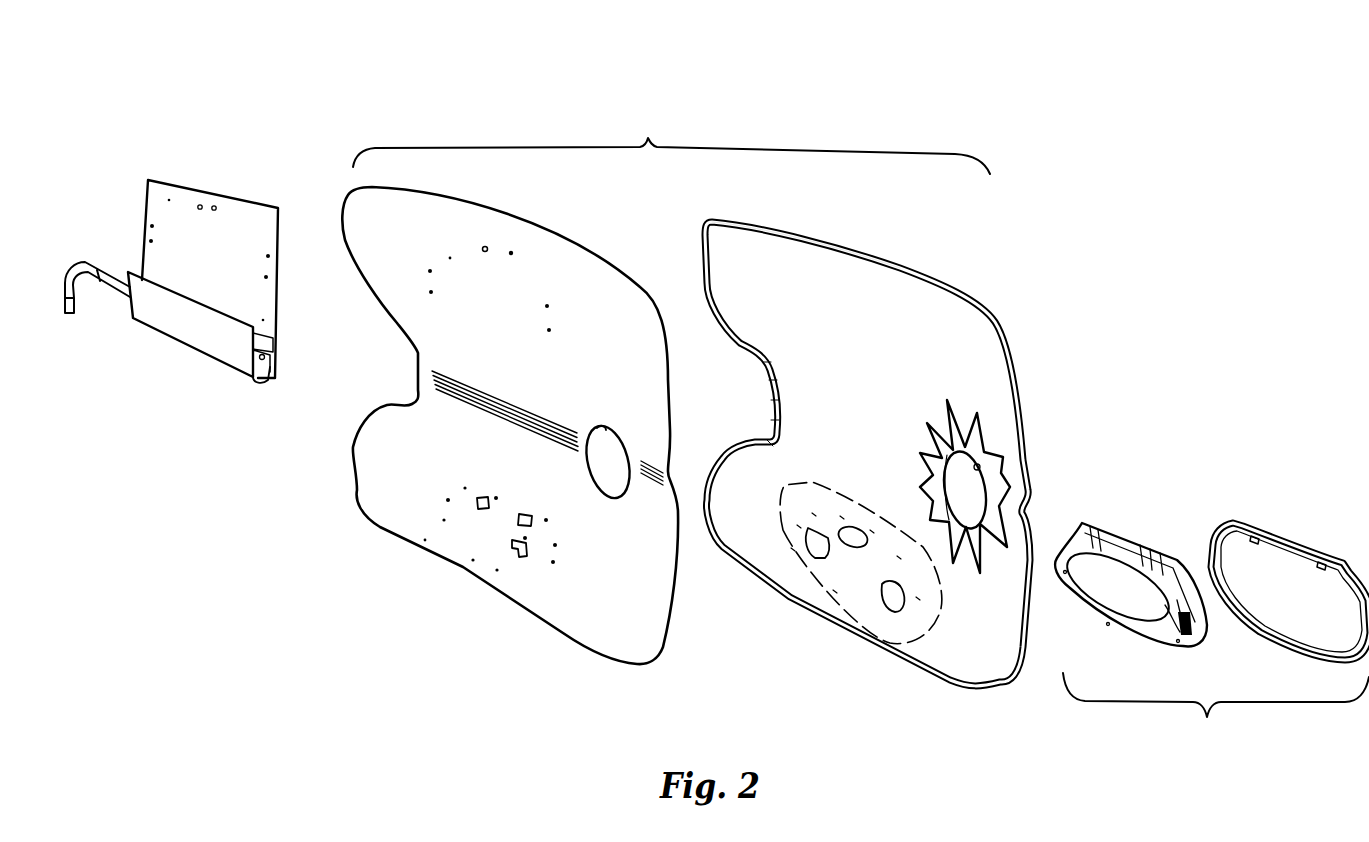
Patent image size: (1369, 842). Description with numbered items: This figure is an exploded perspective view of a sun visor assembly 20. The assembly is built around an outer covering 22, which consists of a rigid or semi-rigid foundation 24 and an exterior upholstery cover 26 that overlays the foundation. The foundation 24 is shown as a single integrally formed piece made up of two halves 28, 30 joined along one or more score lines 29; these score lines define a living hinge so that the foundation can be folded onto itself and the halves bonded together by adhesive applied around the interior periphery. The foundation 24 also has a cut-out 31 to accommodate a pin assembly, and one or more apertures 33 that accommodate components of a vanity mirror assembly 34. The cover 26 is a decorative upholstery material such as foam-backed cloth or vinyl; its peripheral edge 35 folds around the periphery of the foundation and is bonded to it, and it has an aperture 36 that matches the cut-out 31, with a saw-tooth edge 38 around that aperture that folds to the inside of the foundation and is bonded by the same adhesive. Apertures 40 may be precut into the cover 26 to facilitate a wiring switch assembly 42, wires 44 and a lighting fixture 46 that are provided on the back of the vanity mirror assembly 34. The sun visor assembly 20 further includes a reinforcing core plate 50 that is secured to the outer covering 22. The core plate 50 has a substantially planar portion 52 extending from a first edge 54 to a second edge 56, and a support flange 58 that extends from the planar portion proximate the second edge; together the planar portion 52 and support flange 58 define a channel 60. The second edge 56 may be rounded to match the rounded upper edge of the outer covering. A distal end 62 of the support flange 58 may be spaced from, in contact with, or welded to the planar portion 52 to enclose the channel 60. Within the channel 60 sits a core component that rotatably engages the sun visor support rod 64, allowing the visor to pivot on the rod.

The sun visor assembly 20 is at (857, 83).
The outer covering 22 is at (671, 143).
The foundation 24 is at (590, 653).
The exterior upholstery cover 26 is at (940, 250).
The foundation half 28 is at (383, 428).
The score lines 29 is at (647, 485).
The foundation half 30 is at (367, 225).
The cut-out 31 is at (597, 430).
The apertures 33 is at (522, 560).
The vanity mirror assembly 34 is at (1212, 604).
The peripheral edge 35 is at (840, 243).
The aperture 36 is at (980, 463).
The saw-tooth edge 38 is at (975, 442).
The apertures 40 is at (897, 607).
The wiring switch assembly 42 is at (1127, 553).
The wires 44 is at (1147, 553).
The lighting fixture 46 is at (1172, 610).
The reinforcing core plate 50 is at (170, 377).
The planar portion 52 is at (235, 215).
The first edge 54 is at (175, 183).
The second edge 56 is at (222, 360).
The support flange 58 is at (163, 305).
The channel 60 is at (272, 372).
The distal end 62 is at (243, 320).
The sun visor support rod 64 is at (112, 282).